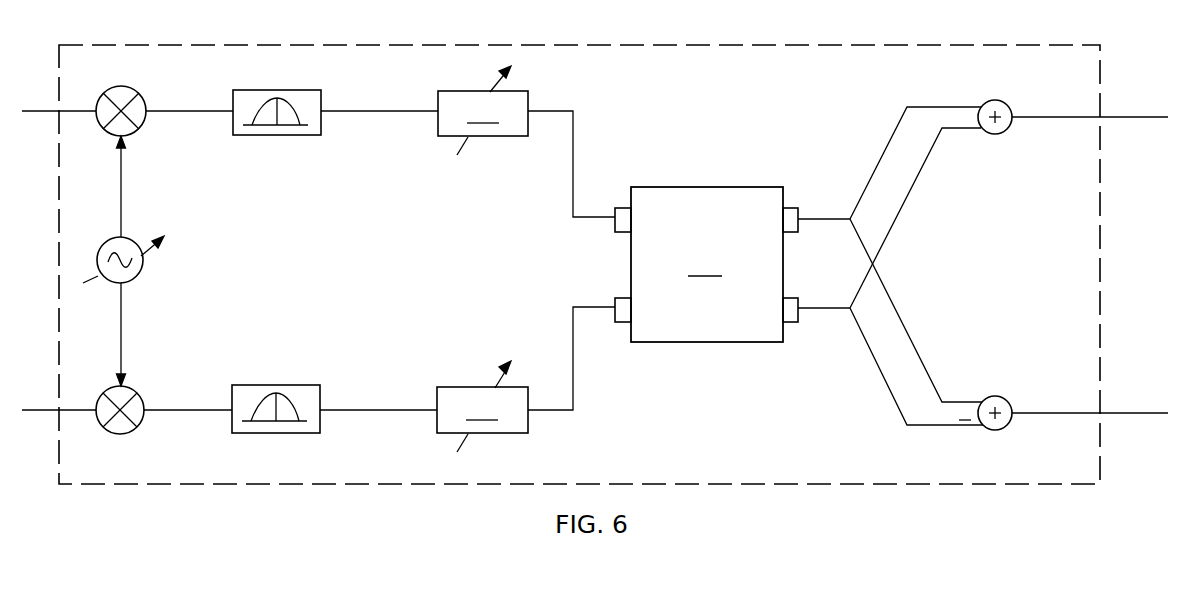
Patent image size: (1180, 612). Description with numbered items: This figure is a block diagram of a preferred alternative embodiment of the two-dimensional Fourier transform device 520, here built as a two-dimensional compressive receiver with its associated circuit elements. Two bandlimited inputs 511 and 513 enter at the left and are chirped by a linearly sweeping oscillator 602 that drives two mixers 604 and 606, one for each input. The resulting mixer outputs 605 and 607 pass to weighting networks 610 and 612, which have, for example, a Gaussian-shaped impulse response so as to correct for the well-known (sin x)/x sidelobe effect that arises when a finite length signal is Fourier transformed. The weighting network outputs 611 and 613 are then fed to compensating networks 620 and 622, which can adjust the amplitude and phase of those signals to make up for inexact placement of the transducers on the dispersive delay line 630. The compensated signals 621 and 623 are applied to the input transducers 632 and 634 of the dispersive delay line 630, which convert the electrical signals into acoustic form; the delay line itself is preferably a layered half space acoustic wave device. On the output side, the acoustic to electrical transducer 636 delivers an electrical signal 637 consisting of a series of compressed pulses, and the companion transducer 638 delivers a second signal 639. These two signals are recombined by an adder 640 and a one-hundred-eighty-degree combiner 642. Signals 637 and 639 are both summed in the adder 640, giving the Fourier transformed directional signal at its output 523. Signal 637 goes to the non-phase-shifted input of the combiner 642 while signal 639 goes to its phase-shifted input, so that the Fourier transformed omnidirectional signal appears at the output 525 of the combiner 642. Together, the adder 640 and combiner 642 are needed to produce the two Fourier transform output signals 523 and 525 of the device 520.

The bandlimited input 511 is at (28, 110).
The bandlimited input 513 is at (30, 408).
The two-dimensional Fourier transform device 520 is at (1004, 44).
The Fourier transform output signal 523 is at (1128, 116).
The Fourier transform output signal 525 is at (1128, 412).
The linearly sweeping oscillator 602 is at (143, 277).
The mixer 604 is at (129, 91).
The mixer output 605 is at (175, 110).
The mixer 606 is at (136, 427).
The mixer output 607 is at (168, 408).
The weighting network 610 is at (322, 88).
The weighting network output 611 is at (378, 110).
The weighting network 612 is at (318, 385).
The weighting network output 613 is at (375, 410).
The compensating network 620 is at (483, 110).
The compensated signal 621 is at (572, 110).
The compensating network 622 is at (482, 406).
The compensated signal 623 is at (562, 413).
The dispersive delay line 630 is at (707, 264).
The input transducer 632 is at (612, 205).
The input transducer 634 is at (615, 324).
The acoustic to electrical transducer 636 is at (791, 207).
The electrical signal 637 is at (821, 217).
The transducer 638 is at (793, 324).
The signal 639 is at (820, 310).
The adder 640 is at (992, 100).
The 180° combiner 642 is at (993, 396).